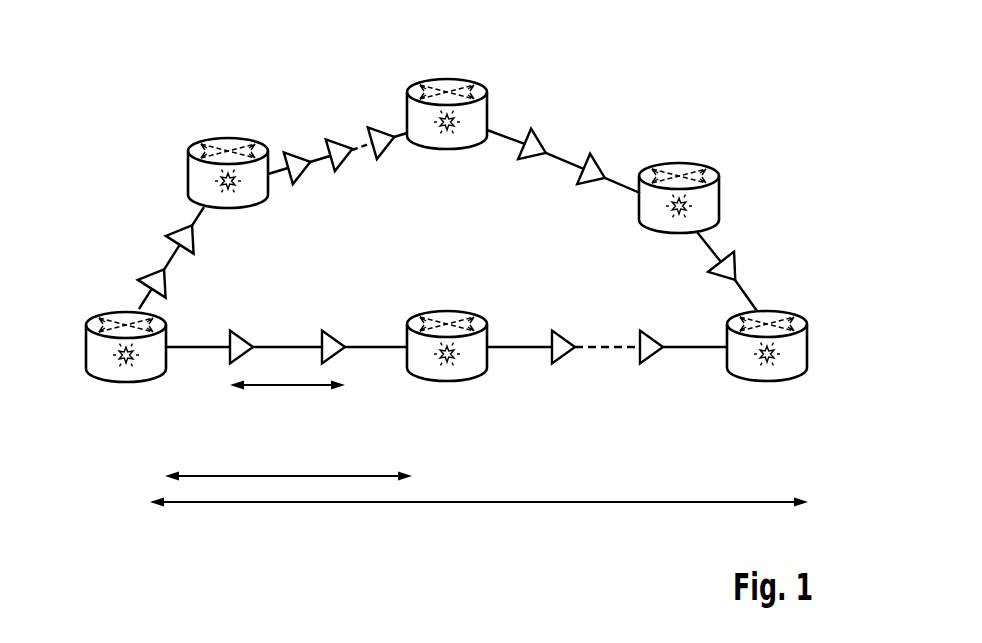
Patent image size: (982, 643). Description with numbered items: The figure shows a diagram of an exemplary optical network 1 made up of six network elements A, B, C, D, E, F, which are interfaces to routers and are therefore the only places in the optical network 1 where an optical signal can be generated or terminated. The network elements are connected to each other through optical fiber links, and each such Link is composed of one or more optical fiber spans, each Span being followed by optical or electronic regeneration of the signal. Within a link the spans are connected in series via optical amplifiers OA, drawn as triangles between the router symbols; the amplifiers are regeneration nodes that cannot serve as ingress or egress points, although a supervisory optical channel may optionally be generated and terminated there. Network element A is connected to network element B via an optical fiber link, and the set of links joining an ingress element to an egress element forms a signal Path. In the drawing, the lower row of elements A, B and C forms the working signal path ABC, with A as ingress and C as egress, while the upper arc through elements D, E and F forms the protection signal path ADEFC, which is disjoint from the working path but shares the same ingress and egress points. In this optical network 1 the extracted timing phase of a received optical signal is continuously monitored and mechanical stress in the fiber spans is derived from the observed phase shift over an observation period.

The optical network 1 is at (777, 94).
The network element A is at (125, 308).
The network element B is at (447, 310).
The network element C is at (772, 310).
The network element D is at (227, 138).
The network element E is at (448, 79).
The network element F is at (676, 162).
The optical amplifier OA is at (152, 268).
The optical fiber link Link is at (237, 474).
The optical fiber span Span is at (302, 388).
The signal path Path is at (442, 504).